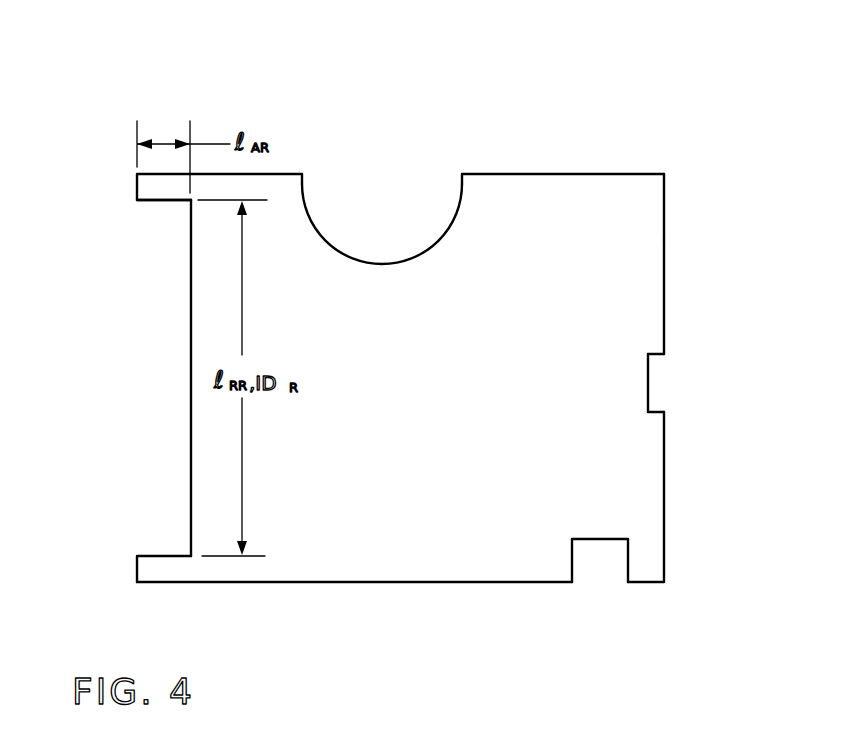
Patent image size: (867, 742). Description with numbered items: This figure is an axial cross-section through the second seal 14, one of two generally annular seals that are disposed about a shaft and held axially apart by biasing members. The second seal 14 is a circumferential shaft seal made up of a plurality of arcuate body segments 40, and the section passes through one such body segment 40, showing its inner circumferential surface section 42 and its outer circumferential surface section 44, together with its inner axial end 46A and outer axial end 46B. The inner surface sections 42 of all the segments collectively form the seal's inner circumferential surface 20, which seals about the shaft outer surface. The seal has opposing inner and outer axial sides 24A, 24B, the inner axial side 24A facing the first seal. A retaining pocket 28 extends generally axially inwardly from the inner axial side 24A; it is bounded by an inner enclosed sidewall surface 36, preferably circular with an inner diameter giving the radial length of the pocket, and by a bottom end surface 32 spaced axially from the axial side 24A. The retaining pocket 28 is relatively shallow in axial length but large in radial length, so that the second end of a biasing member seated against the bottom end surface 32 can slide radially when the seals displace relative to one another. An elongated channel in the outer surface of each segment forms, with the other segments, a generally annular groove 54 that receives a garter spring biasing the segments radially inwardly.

The second seal 14 is at (578, 110).
The inner circumferential surface 20 is at (427, 592).
The inner axial side 24A is at (128, 187).
The outer axial side 24B is at (676, 287).
The retaining pocket 28 is at (150, 420).
The bottom end surface 32 is at (190, 307).
The inner enclosed sidewall surface 36 is at (164, 201).
The arcuate body segment 40 is at (678, 209).
The inner circumferential surface section 42 is at (520, 583).
The outer circumferential surface section 44 is at (507, 173).
The inner axial end 46A is at (137, 572).
The outer axial end 46B is at (665, 447).
The annular groove 54 is at (418, 250).